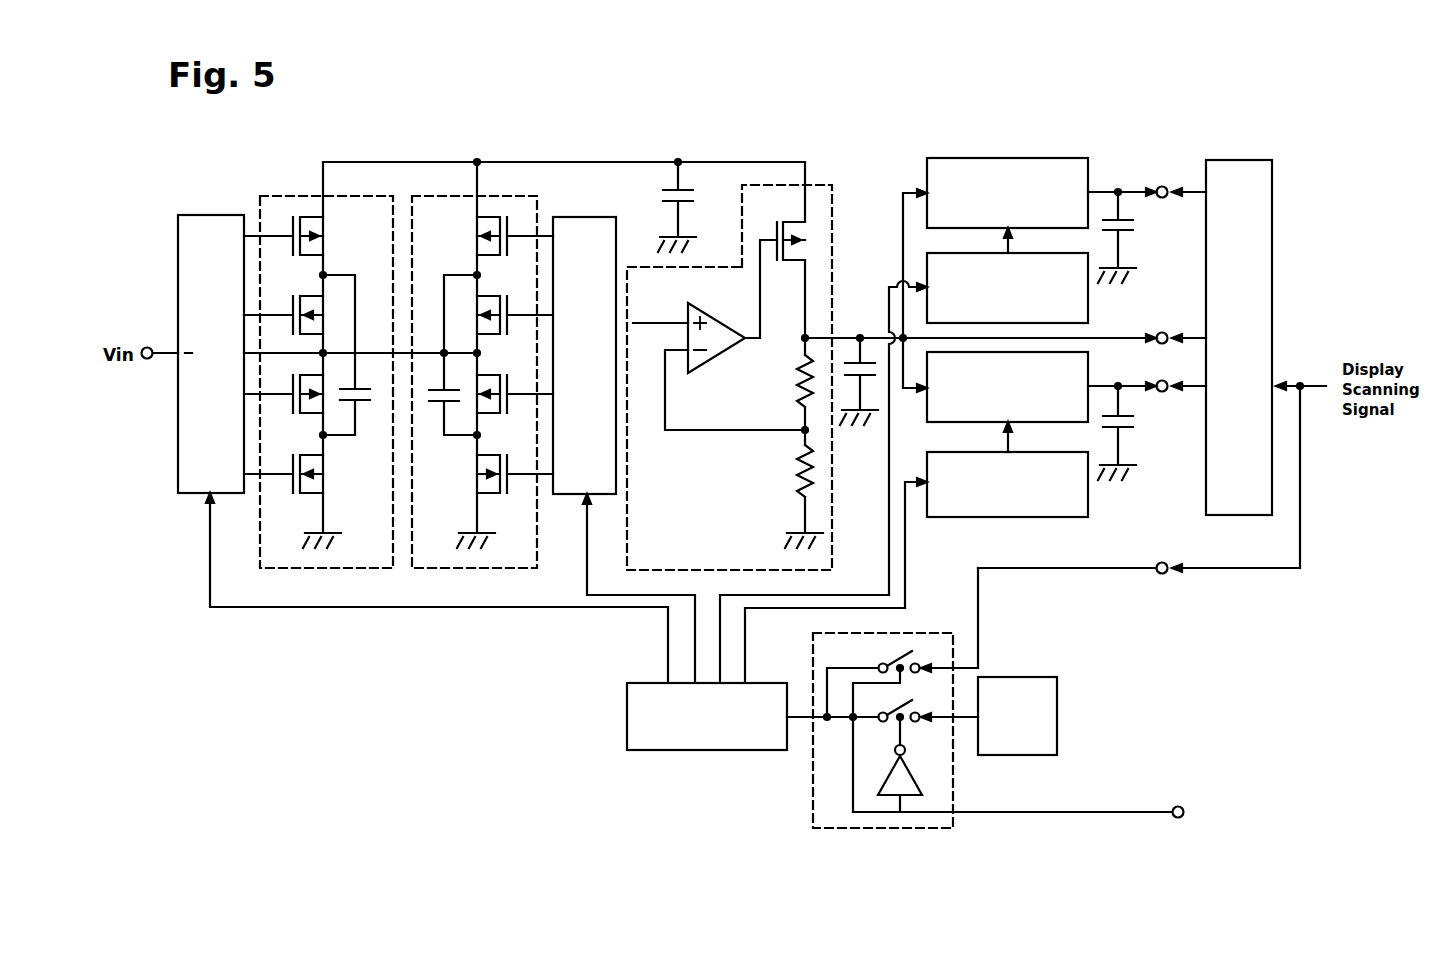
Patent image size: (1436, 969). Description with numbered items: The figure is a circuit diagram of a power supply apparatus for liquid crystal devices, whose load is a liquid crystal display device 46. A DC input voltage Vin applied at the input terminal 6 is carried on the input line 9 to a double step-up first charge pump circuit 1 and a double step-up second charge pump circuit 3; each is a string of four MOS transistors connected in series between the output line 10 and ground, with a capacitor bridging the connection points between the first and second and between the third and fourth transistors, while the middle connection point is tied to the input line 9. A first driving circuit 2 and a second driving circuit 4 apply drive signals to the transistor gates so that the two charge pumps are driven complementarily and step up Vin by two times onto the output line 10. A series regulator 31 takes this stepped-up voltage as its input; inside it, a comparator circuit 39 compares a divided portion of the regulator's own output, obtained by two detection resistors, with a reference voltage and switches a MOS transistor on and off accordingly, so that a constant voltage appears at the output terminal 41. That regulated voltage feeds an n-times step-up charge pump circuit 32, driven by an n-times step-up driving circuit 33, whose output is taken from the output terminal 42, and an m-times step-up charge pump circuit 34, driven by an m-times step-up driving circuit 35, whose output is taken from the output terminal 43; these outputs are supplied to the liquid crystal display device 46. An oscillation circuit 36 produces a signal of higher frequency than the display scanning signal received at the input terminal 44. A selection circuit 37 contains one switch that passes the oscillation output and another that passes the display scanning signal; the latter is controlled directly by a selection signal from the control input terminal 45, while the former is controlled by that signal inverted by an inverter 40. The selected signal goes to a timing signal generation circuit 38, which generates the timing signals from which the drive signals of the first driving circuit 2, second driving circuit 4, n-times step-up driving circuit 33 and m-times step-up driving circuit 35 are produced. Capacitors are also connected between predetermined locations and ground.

The first charge pump circuit 1 is at (360, 350).
The first driving circuit 2 is at (205, 215).
The second charge pump circuit 3 is at (493, 365).
The second driving circuit 4 is at (600, 217).
The input terminal 6 is at (147, 348).
The input line 9 is at (152, 360).
The output line 10 is at (649, 162).
The series regulator 31 is at (745, 352).
The n-times step-up charge pump circuit 32 is at (1088, 172).
The n-times step-up driving circuit 33 is at (1088, 306).
The m-times step-up charge pump circuit 34 is at (1088, 364).
The m-times step-up driving circuit 35 is at (1088, 499).
The oscillation circuit 36 is at (1057, 712).
The selection circuit 37 is at (979, 717).
The timing signal generation circuit 38 is at (705, 752).
The comparator circuit 39 is at (720, 318).
The inverter 40 is at (912, 775).
The output terminal 41 is at (1168, 332).
The output terminal 42 is at (1168, 188).
The output terminal 43 is at (1168, 380).
The input terminal 44 is at (1168, 562).
The control input terminal 45 is at (1182, 806).
The liquid crystal display device 46 is at (1272, 220).